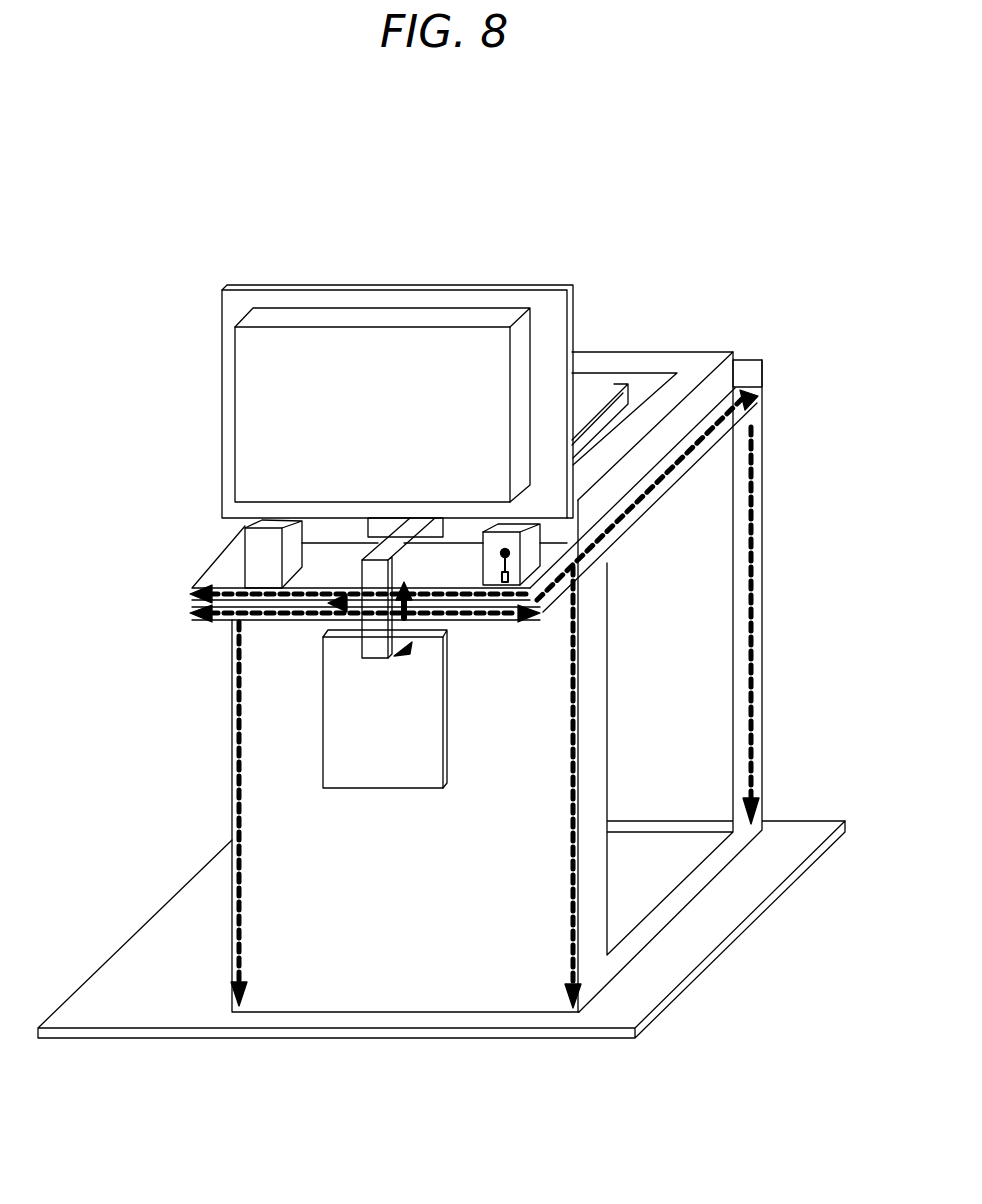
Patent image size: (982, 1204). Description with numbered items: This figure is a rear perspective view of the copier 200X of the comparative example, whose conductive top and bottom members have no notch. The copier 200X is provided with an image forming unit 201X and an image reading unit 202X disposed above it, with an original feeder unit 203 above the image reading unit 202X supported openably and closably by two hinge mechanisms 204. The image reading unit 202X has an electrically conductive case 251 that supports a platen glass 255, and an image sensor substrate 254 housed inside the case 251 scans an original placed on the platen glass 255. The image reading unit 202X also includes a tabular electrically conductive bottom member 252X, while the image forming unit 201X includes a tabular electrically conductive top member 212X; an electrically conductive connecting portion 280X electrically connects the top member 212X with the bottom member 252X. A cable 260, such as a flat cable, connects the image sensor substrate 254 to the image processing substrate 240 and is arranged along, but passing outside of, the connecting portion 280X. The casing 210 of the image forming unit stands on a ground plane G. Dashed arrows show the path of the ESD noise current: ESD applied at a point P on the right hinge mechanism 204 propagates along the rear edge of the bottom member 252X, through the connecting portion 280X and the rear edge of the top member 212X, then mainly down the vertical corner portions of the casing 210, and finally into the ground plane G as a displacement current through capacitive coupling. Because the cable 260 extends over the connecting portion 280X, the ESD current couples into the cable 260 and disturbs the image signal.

The copier 200X is at (453, 213).
The image forming unit 201X is at (778, 658).
The image reading unit 202X is at (735, 350).
The original feeder unit 203 is at (293, 290).
The hinge mechanism 204 is at (257, 555).
The casing 210 is at (267, 680).
The top member 212X is at (220, 620).
The image processing substrate 240 is at (362, 737).
The case 251 is at (758, 366).
The bottom member 252X is at (763, 372).
The image sensor substrate 254 is at (618, 386).
The platen glass 255 is at (578, 392).
The cable 260 is at (360, 565).
The connecting portion 280X is at (415, 642).
The point P is at (522, 572).
The ground plane G is at (143, 960).